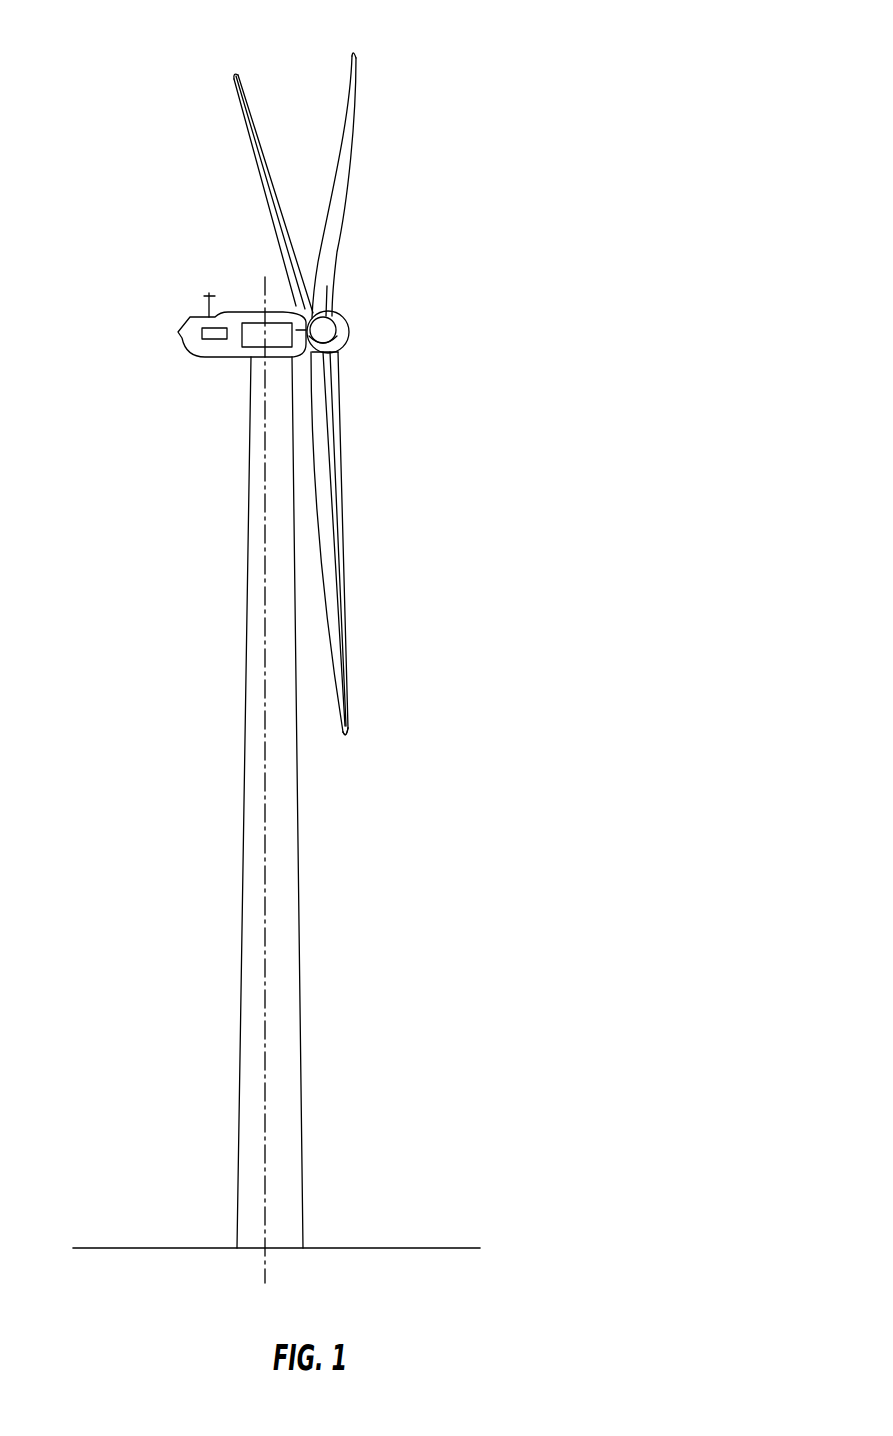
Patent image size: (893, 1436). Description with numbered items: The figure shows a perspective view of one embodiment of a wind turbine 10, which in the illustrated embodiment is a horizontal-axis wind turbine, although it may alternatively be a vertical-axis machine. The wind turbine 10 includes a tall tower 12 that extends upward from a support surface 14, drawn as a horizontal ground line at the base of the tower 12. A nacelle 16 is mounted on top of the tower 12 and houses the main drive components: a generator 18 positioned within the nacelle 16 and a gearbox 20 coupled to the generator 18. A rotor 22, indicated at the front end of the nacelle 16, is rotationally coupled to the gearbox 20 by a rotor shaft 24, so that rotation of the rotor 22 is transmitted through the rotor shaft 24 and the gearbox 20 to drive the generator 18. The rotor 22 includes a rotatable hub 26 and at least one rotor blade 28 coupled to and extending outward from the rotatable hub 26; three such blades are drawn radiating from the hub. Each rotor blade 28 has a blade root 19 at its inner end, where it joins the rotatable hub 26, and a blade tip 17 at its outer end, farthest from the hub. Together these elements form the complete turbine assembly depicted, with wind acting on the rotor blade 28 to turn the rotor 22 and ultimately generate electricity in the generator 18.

The wind turbine 10 is at (476, 90).
The tower 12 is at (241, 938).
The support surface 14 is at (157, 1247).
The nacelle 16 is at (201, 358).
The blade tip 17 is at (350, 728).
The generator 18 is at (205, 320).
The blade root 19 is at (340, 375).
The gearbox 20 is at (248, 322).
The rotor 22 is at (355, 311).
The rotor shaft 24 is at (302, 338).
The rotatable hub 26 is at (350, 338).
The rotor blade 28 is at (255, 147).